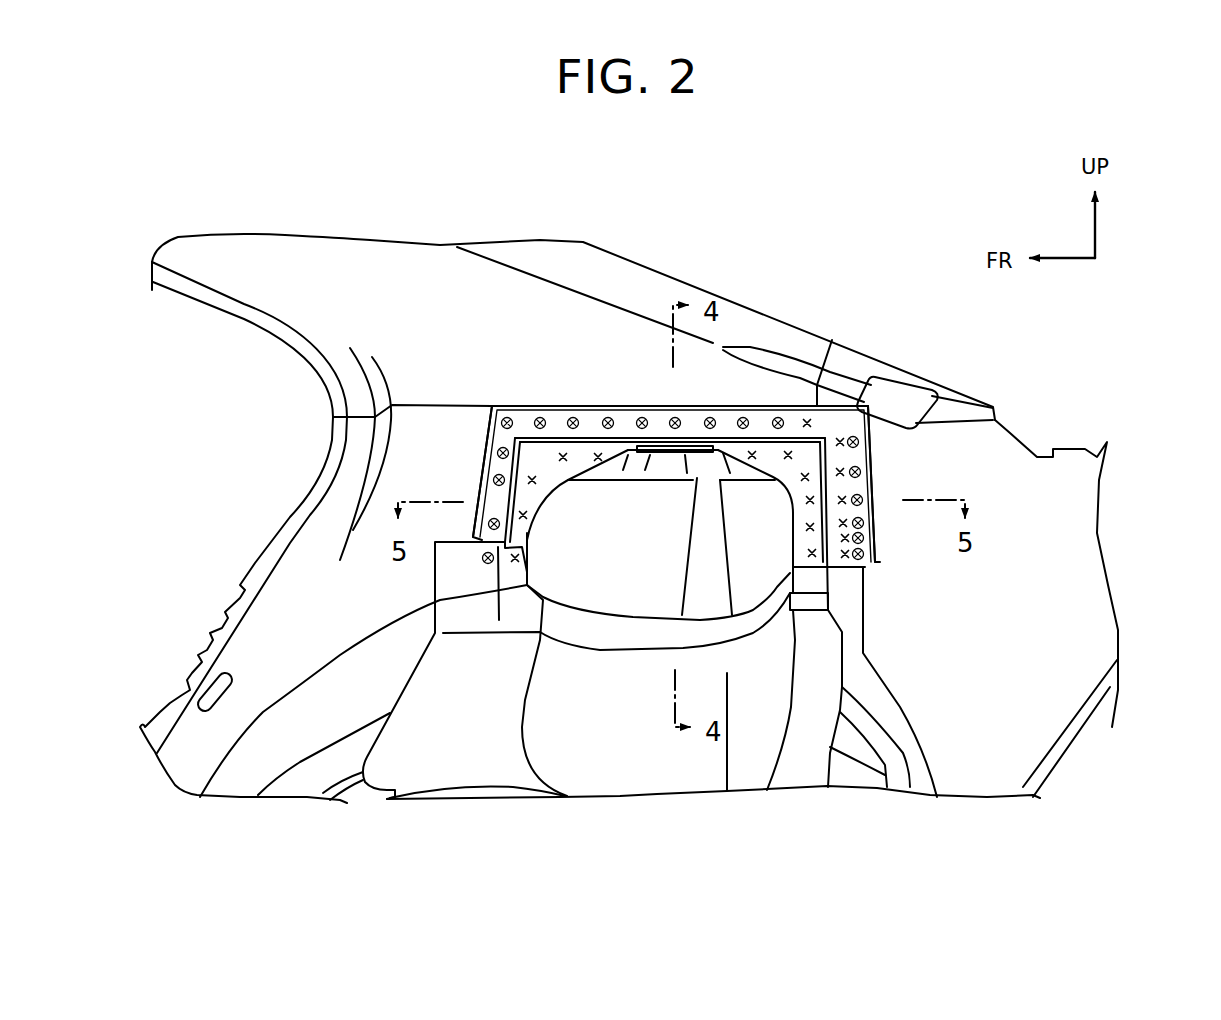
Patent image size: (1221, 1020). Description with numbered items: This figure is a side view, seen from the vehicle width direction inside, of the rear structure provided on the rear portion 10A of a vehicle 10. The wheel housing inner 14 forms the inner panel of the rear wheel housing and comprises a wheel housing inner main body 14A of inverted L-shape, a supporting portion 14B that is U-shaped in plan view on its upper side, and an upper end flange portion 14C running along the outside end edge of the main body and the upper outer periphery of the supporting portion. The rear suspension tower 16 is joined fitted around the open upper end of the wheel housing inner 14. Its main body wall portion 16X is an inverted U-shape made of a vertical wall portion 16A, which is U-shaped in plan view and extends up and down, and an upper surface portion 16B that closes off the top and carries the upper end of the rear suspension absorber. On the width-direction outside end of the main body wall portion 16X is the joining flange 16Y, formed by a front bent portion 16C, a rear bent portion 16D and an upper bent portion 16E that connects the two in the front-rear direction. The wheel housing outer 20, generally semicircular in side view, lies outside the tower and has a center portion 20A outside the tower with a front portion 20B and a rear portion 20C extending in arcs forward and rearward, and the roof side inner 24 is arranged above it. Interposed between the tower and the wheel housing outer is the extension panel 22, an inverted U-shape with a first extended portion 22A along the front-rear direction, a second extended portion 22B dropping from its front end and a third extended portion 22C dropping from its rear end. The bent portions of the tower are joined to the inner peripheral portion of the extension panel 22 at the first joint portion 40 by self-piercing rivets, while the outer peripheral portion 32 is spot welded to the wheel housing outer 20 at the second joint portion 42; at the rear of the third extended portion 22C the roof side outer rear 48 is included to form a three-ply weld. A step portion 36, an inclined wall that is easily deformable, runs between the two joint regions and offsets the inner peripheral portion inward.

The vehicle 10 is at (573, 289).
The rear portion 10A is at (662, 222).
The roof side inner 24 is at (370, 270).
The rear suspension tower 16 is at (713, 447).
The vertical wall portion 16A is at (604, 574).
The upper surface portion 16B is at (673, 465).
The front bent portion 16C is at (499, 620).
The rear bent portion 16D is at (838, 572).
The upper bent portion 16E is at (763, 457).
The main body wall portion 16X is at (618, 577).
The joining flange 16Y is at (694, 530).
The wheel housing outer 20 is at (244, 565).
The center portion 20A is at (417, 420).
The front portion 20B is at (245, 767).
The rear portion 20C is at (918, 773).
The extension panel 22 is at (479, 417).
The first extended portion 22A is at (592, 416).
The second extended portion 22B is at (495, 503).
The third extended portion 22C is at (853, 510).
The outer peripheral portion 32 is at (555, 418).
The step portion 36 is at (530, 436).
The first joint portion 40 is at (537, 482).
The second joint portion 42 is at (675, 418).
The wheel housing inner 14 is at (598, 804).
The wheel housing inner main body 14A is at (468, 767).
The supporting portion 14B is at (653, 747).
The upper end flange portion 14C is at (713, 637).
The roof side outer rear 48 is at (1083, 598).